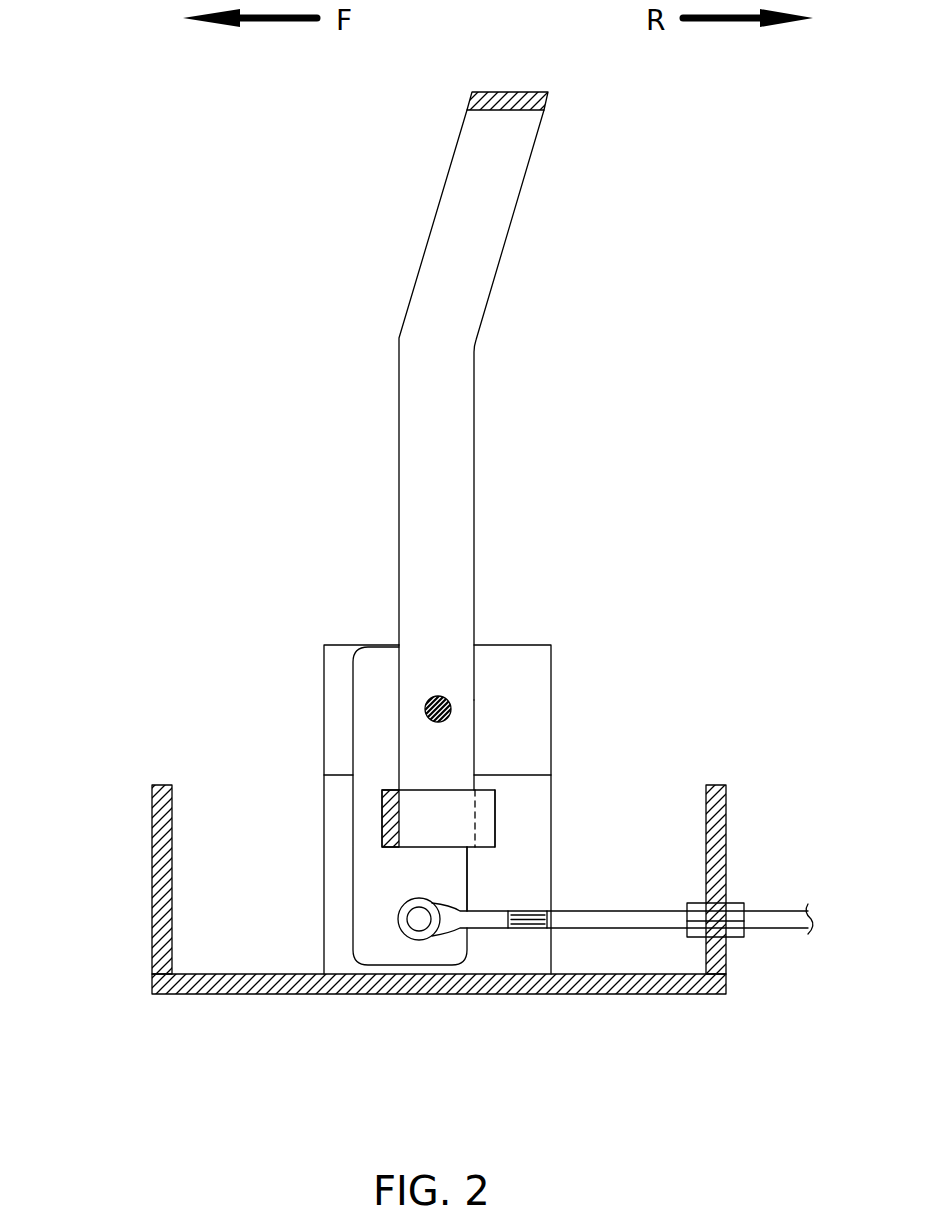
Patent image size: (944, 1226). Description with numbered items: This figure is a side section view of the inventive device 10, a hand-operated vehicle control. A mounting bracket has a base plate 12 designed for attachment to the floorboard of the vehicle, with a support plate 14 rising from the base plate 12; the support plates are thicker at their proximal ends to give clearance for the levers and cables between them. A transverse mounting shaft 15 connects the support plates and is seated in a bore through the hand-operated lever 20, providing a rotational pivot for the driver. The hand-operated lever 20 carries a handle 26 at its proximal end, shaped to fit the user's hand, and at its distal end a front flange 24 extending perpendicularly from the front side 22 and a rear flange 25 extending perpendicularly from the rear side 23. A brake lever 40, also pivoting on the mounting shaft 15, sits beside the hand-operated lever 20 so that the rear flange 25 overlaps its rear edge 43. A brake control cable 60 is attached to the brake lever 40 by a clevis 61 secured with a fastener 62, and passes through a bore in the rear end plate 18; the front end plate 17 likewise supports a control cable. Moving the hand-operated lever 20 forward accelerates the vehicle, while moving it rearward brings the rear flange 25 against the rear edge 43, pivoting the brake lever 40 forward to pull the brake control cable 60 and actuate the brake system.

The inventive device 10 is at (709, 474).
The base plate 12 is at (608, 983).
The support plate 14 is at (343, 662).
The mounting shaft 15 is at (449, 703).
The front end plate 17 is at (160, 850).
The rear end plate 18 is at (718, 844).
The hand-operated lever 20 is at (433, 404).
The front side 22 is at (392, 747).
The rear side 23 is at (484, 767).
The front flange 24 is at (393, 821).
The rear flange 25 is at (488, 811).
The handle 26 is at (508, 92).
The brake lever 40 is at (363, 918).
The rear edge 43 is at (476, 900).
The brake control cable 60 is at (591, 913).
The clevis 61 is at (491, 922).
The fastener 62 is at (420, 930).